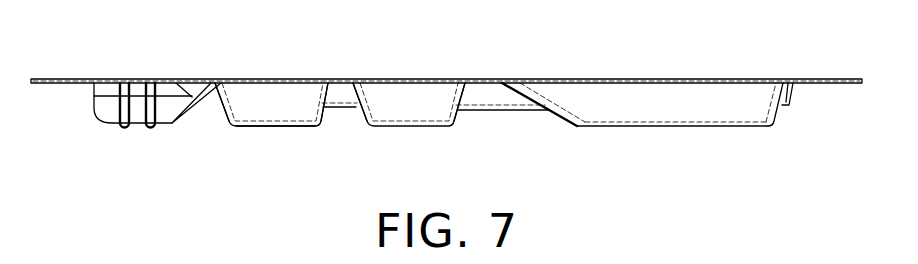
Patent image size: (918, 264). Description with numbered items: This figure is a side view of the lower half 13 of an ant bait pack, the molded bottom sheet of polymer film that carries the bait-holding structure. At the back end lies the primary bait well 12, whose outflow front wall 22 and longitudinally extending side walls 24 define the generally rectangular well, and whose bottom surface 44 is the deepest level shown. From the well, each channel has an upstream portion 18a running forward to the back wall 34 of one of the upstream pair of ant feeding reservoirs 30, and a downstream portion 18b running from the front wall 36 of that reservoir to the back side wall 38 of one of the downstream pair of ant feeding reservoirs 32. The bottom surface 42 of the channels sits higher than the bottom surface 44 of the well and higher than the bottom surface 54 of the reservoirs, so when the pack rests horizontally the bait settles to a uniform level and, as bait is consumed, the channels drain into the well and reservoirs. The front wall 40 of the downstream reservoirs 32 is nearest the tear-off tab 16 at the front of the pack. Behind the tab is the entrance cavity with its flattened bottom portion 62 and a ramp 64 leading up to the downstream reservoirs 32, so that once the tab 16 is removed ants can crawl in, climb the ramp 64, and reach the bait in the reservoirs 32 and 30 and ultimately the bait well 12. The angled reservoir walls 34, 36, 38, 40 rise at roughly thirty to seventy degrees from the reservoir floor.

The primary bait well 12 is at (642, 119).
The lower half 13 is at (819, 96).
The tear-off tab 16 is at (94, 97).
The upstream portion of channel 18a is at (502, 90).
The downstream portion of channel 18b is at (344, 92).
The outflow front wall 22 is at (545, 107).
The side wall 24 is at (728, 110).
The upstream pair of ant feeding reservoirs 30 is at (401, 112).
The downstream pair of ant feeding reservoirs 32 is at (263, 110).
The back wall 34 is at (449, 94).
The front wall 36 is at (368, 97).
The back side wall 38 is at (325, 102).
The front wall 40 is at (222, 95).
The bottom surface of channel 42 is at (510, 111).
The bottom surface of bait storage well 44 is at (674, 126).
The bottom surface of reservoirs 54 is at (277, 128).
The flattened bottom portion 62 is at (157, 127).
The ramp 64 is at (196, 103).